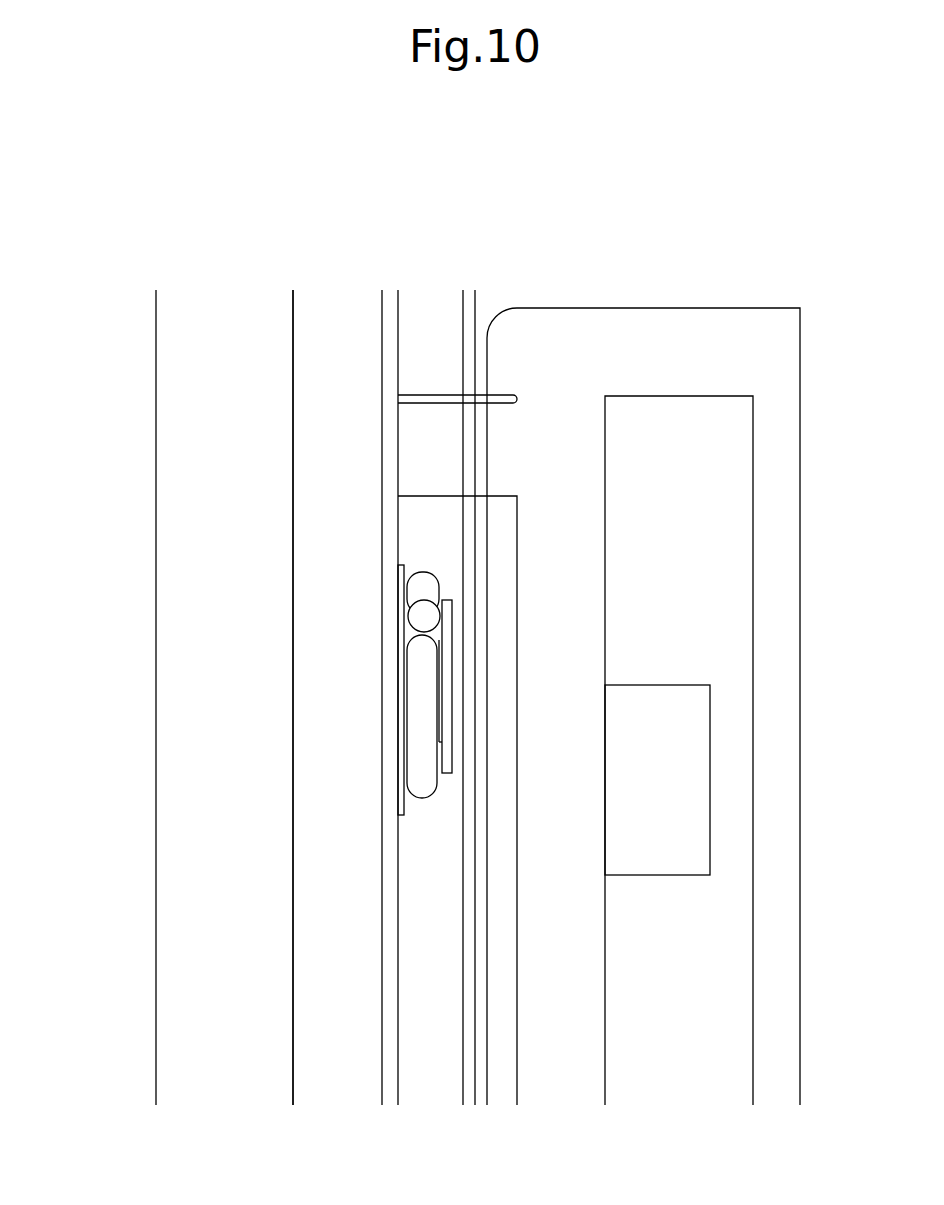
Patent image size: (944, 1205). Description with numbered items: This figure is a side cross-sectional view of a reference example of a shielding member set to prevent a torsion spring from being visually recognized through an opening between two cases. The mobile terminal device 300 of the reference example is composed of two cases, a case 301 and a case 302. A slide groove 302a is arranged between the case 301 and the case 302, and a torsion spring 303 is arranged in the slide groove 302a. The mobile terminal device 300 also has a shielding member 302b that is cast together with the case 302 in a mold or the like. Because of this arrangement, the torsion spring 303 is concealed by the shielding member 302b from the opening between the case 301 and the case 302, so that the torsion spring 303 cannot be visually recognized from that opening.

The mobile terminal device 300 is at (246, 246).
The case 301 is at (322, 426).
The case 302 is at (532, 355).
The slide groove 302a is at (483, 543).
The shielding member 302b is at (434, 425).
The torsion spring 303 is at (418, 777).